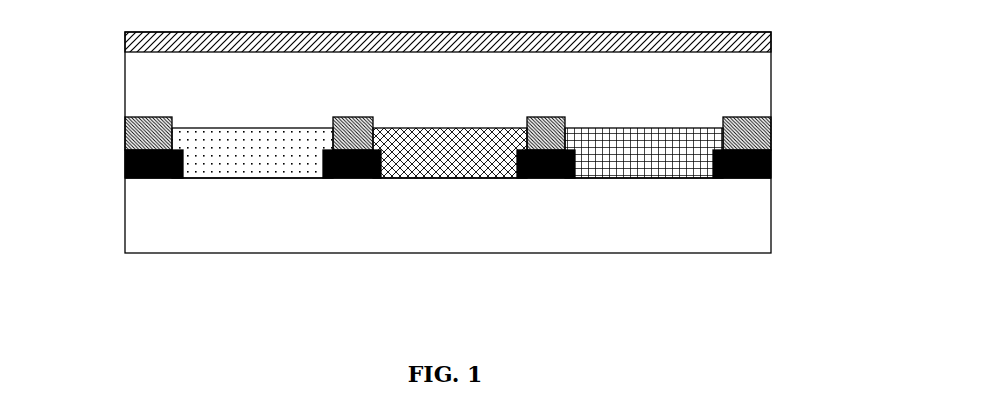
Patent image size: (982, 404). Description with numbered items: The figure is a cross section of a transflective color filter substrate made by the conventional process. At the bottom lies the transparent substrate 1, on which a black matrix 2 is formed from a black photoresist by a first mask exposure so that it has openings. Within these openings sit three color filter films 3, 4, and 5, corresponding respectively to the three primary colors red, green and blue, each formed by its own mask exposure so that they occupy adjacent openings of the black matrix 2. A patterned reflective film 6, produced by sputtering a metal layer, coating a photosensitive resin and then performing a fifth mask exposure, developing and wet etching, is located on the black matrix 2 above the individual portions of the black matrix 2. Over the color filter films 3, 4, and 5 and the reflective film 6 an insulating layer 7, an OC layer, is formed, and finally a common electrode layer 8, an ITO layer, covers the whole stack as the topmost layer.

The transparent substrate 1 is at (745, 212).
The black matrix 2 is at (125, 167).
The color filter film 3 is at (251, 152).
The color filter film 4 is at (445, 152).
The color filter film 5 is at (645, 152).
The reflective film 6 is at (771, 131).
The insulating layer 7 is at (745, 78).
The common electrode layer 8 is at (125, 43).